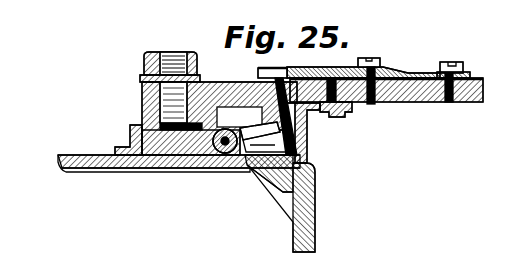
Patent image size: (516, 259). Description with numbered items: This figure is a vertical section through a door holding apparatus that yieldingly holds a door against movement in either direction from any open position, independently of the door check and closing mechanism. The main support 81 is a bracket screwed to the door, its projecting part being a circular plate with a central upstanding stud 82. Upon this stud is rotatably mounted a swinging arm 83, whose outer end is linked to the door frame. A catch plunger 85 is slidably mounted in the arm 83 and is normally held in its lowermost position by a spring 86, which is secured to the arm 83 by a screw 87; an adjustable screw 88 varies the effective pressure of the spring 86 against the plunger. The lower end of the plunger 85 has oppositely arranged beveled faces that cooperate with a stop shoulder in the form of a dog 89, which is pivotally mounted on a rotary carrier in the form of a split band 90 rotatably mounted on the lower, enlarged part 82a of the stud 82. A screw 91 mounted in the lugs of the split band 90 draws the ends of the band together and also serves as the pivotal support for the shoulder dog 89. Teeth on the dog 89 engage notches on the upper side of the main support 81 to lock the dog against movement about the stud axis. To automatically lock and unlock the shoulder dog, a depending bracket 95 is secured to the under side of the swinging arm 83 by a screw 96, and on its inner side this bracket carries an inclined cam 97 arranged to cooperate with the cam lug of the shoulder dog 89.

The main support 81 is at (96, 172).
The stud 82 is at (142, 87).
The lower enlarged part of the stud 82a is at (142, 120).
The swinging arm 83 is at (428, 97).
The catch plunger 85 is at (268, 97).
The spring 86 is at (335, 68).
The screw 87 is at (458, 66).
The adjustable screw 88 is at (380, 62).
The shoulder dog 89 is at (244, 152).
The split band 90 is at (130, 131).
The screw 91 is at (226, 157).
The depending bracket 95 is at (307, 140).
The screw 96 is at (348, 115).
The cam 97 is at (315, 180).